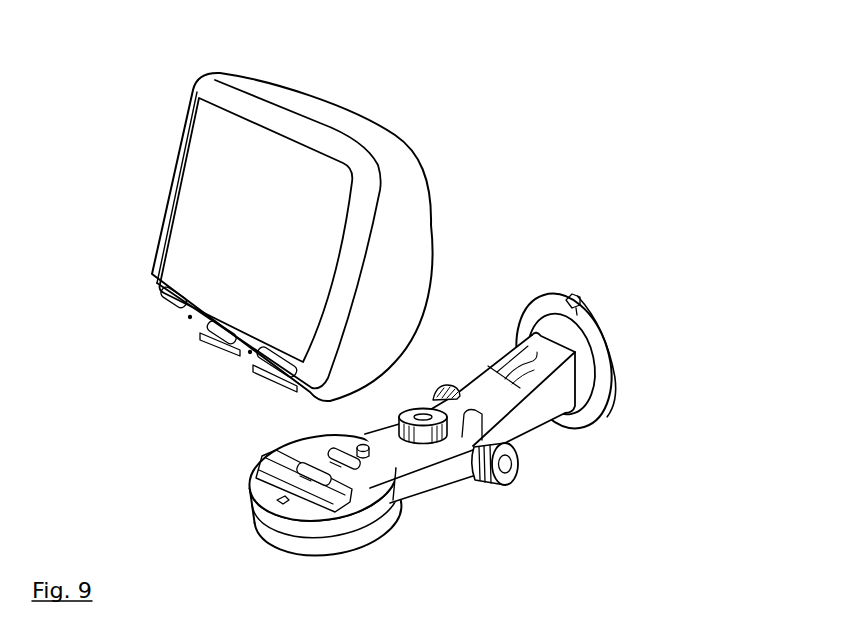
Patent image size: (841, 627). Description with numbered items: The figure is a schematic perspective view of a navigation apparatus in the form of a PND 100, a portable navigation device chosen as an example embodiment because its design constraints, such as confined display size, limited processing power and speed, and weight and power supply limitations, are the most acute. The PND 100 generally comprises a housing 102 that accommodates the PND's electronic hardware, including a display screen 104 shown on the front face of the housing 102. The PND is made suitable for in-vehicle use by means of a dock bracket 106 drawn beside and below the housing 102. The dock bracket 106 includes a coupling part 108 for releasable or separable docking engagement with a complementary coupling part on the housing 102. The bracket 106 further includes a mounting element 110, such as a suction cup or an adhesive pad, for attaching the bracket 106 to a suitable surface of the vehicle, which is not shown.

The PND 100 is at (142, 369).
The housing 102 is at (410, 212).
The display screen 104 is at (193, 242).
The dock bracket 106 is at (404, 455).
The coupling part 108 is at (250, 498).
The mounting element 110 is at (597, 418).